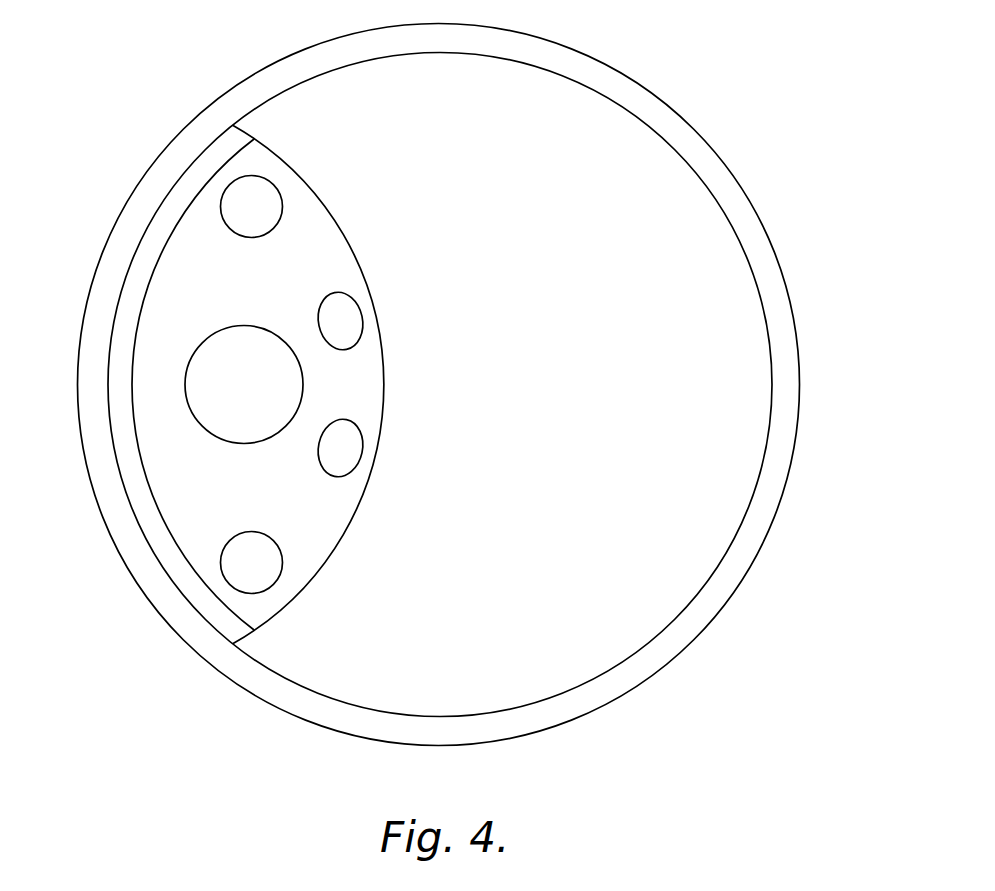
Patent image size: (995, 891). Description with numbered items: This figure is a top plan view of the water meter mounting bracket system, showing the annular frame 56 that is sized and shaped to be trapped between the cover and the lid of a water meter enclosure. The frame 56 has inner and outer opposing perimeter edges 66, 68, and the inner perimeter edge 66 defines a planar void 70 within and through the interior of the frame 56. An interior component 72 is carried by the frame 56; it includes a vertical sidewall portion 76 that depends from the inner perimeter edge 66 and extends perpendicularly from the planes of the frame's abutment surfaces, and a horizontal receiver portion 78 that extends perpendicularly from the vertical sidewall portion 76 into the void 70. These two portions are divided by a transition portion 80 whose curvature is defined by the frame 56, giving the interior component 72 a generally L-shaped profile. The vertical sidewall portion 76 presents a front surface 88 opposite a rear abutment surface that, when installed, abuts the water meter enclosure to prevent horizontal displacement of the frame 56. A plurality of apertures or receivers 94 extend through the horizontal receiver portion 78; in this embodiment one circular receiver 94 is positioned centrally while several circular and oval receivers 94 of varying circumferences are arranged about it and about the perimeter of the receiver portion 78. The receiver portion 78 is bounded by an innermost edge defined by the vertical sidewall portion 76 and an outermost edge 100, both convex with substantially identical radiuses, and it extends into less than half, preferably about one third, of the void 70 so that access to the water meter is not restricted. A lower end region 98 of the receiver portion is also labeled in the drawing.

The annular frame 56 is at (460, 381).
The inner perimeter edge 66 is at (754, 276).
The outer perimeter edge 68 is at (770, 238).
The planar void 70 is at (572, 110).
The interior component 72 is at (260, 386).
The vertical sidewall portion 76 is at (180, 188).
The horizontal receiver portion 78 is at (385, 328).
The transition portion 80 is at (153, 506).
The front surface 88 is at (139, 252).
The receivers 94 is at (265, 205).
The lower end 98 is at (222, 630).
The outermost edge 100 is at (362, 384).